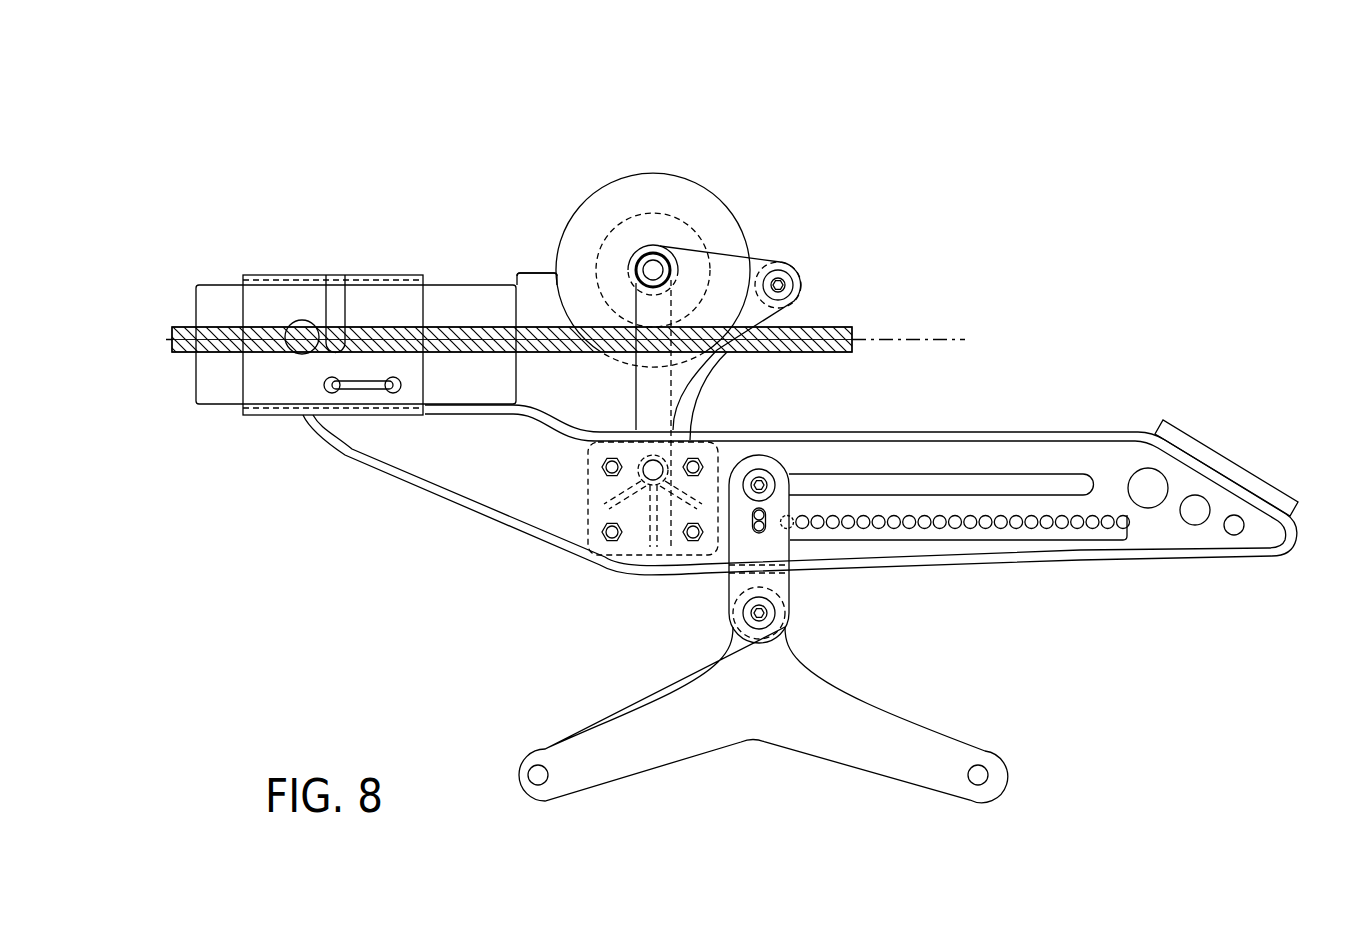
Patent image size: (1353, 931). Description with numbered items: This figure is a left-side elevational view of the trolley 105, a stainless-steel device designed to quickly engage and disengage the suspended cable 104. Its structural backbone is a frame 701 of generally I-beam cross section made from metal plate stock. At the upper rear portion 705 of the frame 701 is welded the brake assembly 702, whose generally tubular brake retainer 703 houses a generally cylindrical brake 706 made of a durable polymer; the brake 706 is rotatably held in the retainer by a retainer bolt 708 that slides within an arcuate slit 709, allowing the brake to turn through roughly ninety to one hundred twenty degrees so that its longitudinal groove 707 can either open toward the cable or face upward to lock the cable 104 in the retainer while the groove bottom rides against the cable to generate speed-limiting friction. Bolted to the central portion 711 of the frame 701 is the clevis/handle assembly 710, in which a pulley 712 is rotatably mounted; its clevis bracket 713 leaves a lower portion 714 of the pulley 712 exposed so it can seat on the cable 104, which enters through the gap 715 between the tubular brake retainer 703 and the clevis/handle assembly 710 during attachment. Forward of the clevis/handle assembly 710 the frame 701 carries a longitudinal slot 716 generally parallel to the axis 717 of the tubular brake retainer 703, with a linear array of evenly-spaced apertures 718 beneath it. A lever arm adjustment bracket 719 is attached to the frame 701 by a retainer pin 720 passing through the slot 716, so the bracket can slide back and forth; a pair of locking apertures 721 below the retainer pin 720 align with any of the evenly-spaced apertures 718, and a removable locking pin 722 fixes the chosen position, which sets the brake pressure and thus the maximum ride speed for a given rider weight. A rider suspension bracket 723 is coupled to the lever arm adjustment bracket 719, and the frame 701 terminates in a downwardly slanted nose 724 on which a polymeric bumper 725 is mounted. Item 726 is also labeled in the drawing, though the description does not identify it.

The trolley 105 is at (456, 110).
The cable 104 is at (833, 347).
The frame 701 is at (500, 508).
The brake assembly 702 is at (311, 236).
The tubular brake retainer 703 is at (276, 410).
The upper rear portion 705 is at (356, 424).
The brake 706 is at (473, 296).
The longitudinal groove 707 is at (472, 362).
The retainer bolt 708 is at (301, 320).
The arcuate slit 709 is at (350, 303).
The clevis/handle assembly 710 is at (661, 397).
The central portion 711 is at (800, 534).
The pulley 712 is at (618, 208).
The clevis bracket 713 is at (771, 262).
The lower portion 714 is at (626, 366).
The gap 715 is at (535, 271).
The longitudinal slot 716 is at (911, 466).
The axis 717 is at (924, 333).
The evenly-spaced apertures 718 is at (945, 546).
The lever arm adjustment bracket 719 is at (782, 584).
The retainer pin 720 is at (761, 484).
The locking apertures 721 is at (746, 532).
The removable locking pin 722 is at (770, 526).
The rider suspension bracket 723 is at (644, 726).
The downwardly slanted nose 724 is at (1212, 527).
The bumper 725 is at (1216, 464).
The slot 726 is at (330, 402).